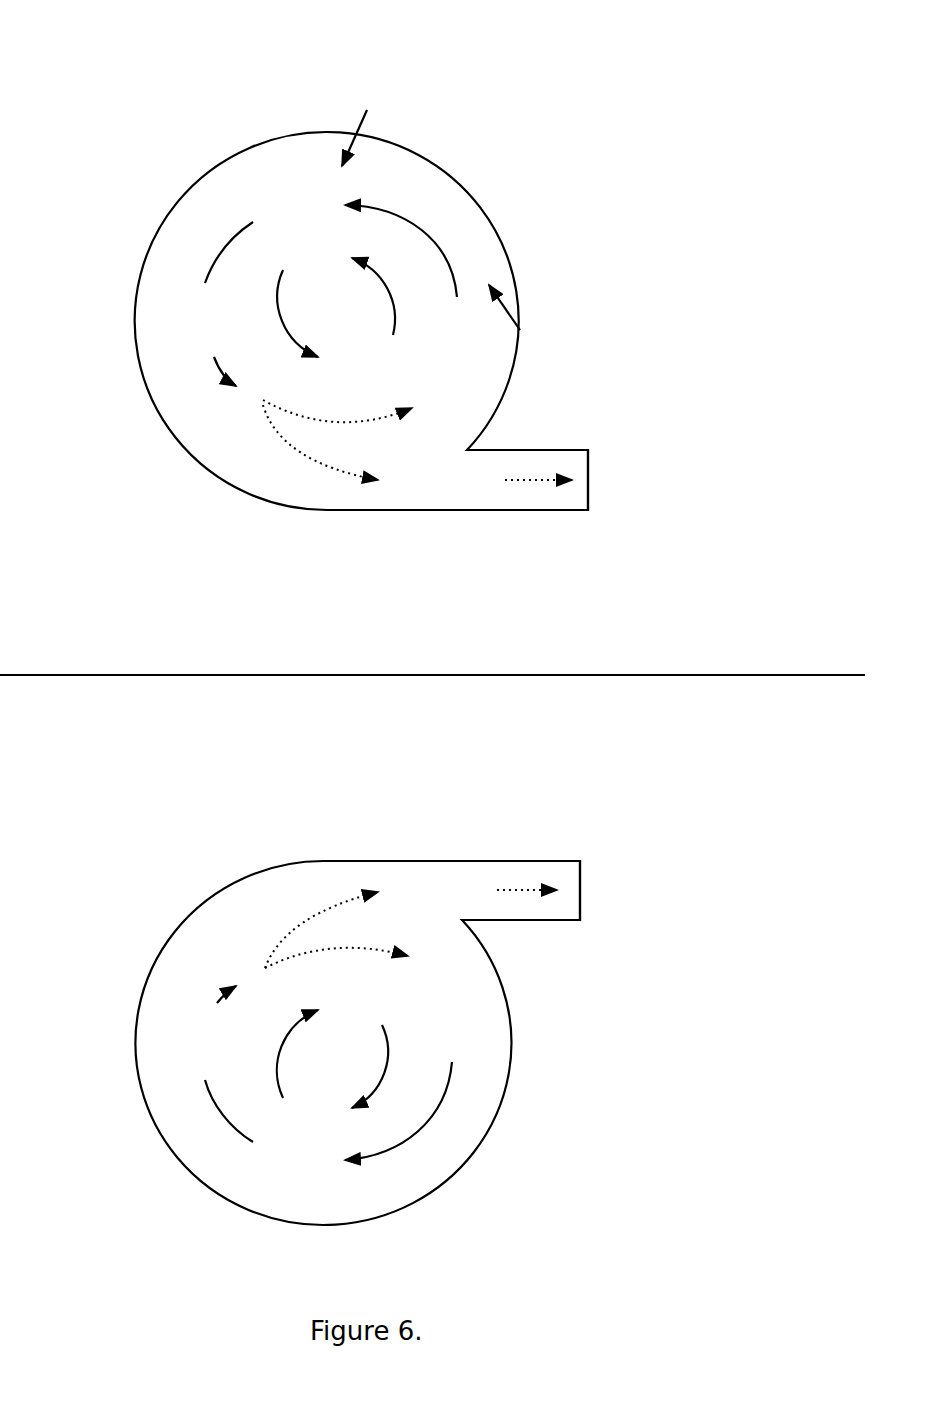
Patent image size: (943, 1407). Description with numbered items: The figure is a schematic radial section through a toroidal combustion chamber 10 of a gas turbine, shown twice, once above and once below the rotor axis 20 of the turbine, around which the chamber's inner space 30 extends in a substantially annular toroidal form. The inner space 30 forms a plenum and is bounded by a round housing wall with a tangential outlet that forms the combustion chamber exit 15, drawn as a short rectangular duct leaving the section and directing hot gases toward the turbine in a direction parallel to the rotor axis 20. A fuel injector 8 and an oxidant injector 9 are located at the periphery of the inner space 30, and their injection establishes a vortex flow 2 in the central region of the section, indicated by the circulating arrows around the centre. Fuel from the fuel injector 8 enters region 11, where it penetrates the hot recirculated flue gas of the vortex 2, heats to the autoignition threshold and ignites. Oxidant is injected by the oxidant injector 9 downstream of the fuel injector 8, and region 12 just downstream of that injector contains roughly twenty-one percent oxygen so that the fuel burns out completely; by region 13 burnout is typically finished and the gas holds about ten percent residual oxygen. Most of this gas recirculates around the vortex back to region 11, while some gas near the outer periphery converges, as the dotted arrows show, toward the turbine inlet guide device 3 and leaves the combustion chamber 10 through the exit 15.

The vortex flow 2 is at (336, 683).
The turbine inlet guide device 3 is at (521, 686).
The fuel injector 8 is at (523, 319).
The oxidant injector 9 is at (366, 121).
The combustion chamber 10 is at (204, 132).
The region 11 is at (375, 611).
The region 12 is at (363, 675).
The region 13 is at (215, 682).
The combustion chamber exit 15 is at (576, 432).
The rotor axis 20 is at (762, 662).
The inner space 30 is at (146, 365).